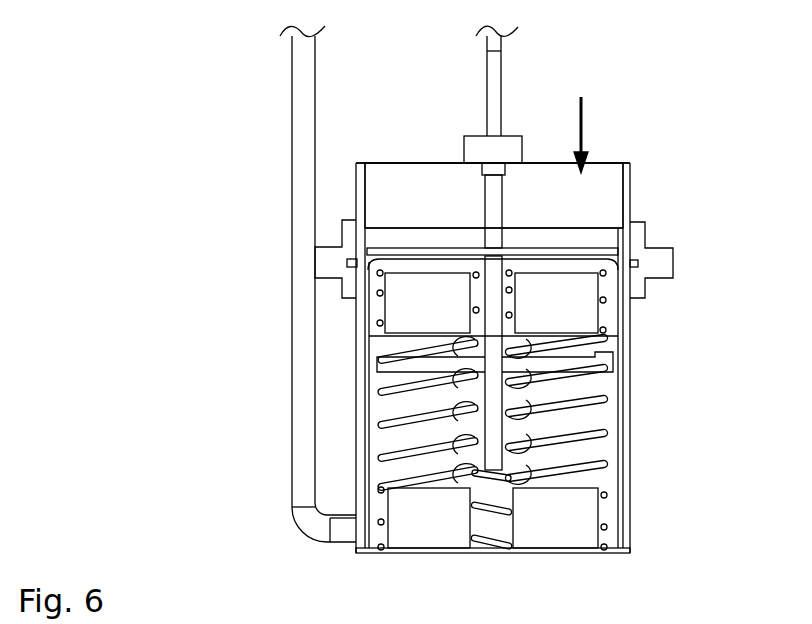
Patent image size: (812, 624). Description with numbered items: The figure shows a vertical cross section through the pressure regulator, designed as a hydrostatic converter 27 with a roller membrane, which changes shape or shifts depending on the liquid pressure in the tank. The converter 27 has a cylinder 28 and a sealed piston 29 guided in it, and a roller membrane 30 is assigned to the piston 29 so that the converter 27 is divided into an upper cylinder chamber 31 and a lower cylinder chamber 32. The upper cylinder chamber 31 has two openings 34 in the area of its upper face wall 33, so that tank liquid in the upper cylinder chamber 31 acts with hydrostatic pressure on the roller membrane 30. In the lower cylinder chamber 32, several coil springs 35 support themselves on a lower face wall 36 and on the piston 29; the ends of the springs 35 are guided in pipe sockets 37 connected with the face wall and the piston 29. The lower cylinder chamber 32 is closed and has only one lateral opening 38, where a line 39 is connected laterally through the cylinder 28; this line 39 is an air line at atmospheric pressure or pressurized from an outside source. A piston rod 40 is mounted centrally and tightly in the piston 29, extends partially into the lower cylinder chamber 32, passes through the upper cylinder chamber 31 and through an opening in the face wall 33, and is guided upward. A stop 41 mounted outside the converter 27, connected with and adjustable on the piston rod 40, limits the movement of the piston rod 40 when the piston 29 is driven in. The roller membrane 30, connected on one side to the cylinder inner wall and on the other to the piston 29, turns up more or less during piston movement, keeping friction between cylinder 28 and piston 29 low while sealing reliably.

The hydrostatic converter 27 is at (702, 412).
The cylinder 28 is at (338, 381).
The piston 29 is at (604, 240).
The roller membrane 30 is at (382, 271).
The upper cylinder chamber 31 is at (393, 180).
The lower cylinder chamber 32 is at (598, 383).
The upper face wall 33 is at (436, 163).
The opening 34 is at (583, 118).
The coil spring 35 is at (393, 438).
The lower face wall 36 is at (416, 556).
The pipe socket 37 is at (383, 312).
The lateral opening 38 is at (355, 534).
The line 39 is at (303, 139).
The piston rod 40 is at (493, 63).
The stop 41 is at (510, 147).